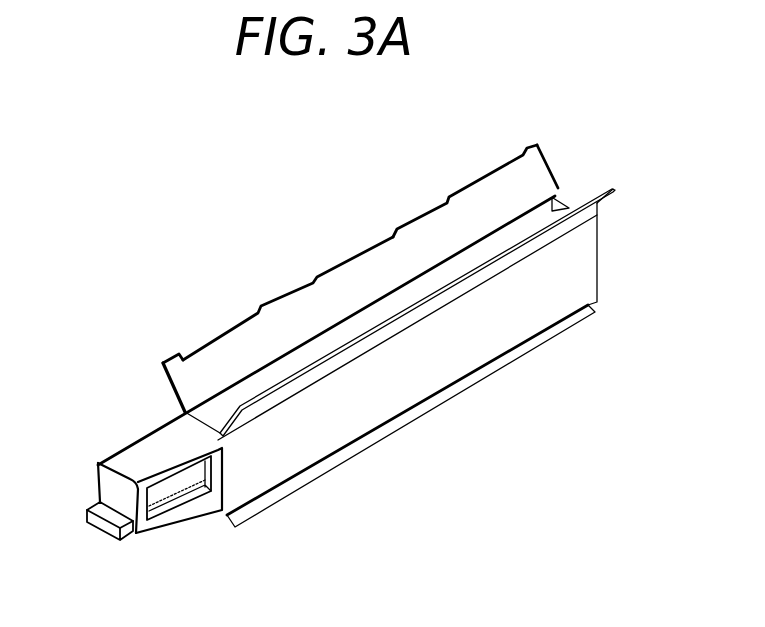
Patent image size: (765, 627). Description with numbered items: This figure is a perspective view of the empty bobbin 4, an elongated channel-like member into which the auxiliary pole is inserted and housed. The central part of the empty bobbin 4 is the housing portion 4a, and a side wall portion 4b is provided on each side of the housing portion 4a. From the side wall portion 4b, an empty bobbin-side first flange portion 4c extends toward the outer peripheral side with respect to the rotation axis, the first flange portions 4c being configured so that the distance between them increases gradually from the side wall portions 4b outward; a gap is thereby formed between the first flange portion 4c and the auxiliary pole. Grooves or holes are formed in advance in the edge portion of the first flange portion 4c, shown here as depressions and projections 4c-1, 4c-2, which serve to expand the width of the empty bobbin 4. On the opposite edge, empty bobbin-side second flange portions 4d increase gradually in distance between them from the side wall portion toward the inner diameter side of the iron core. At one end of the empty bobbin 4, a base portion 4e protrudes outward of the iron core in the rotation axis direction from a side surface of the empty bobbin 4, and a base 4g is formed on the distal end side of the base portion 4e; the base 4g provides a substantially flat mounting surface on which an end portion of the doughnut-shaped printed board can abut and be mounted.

The empty bobbin 4 is at (205, 223).
The housing portion 4a is at (400, 387).
The side wall portion 4b is at (557, 280).
The first flange portion 4c is at (553, 170).
The depression 4c-1 is at (352, 259).
The projection 4c-2 is at (424, 211).
The second flange portion 4d is at (520, 357).
The base portion 4e is at (137, 453).
The base 4g is at (98, 503).